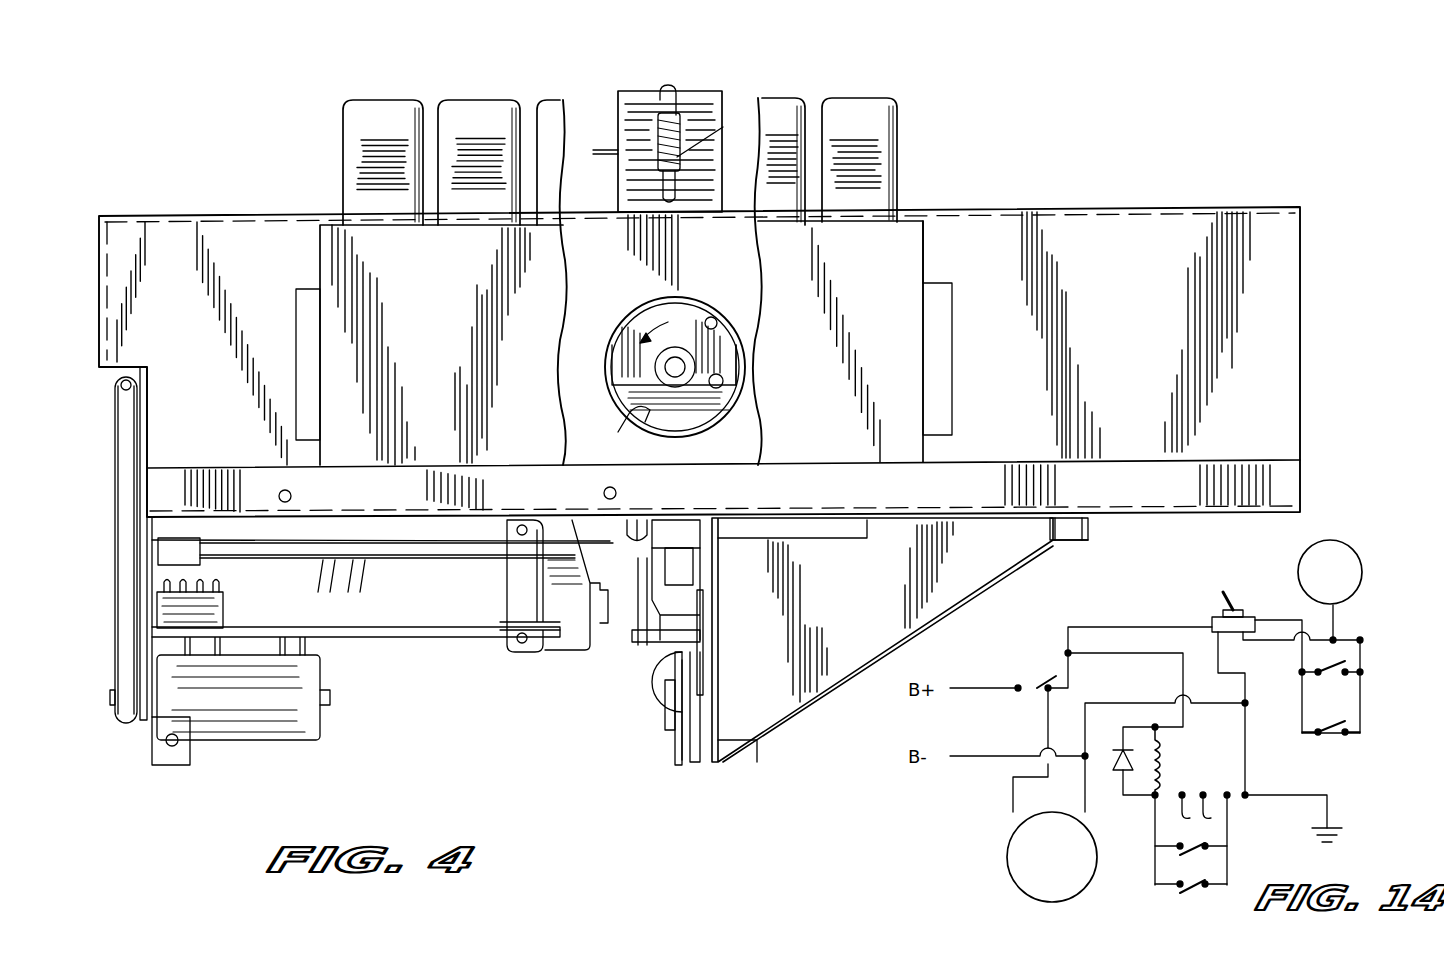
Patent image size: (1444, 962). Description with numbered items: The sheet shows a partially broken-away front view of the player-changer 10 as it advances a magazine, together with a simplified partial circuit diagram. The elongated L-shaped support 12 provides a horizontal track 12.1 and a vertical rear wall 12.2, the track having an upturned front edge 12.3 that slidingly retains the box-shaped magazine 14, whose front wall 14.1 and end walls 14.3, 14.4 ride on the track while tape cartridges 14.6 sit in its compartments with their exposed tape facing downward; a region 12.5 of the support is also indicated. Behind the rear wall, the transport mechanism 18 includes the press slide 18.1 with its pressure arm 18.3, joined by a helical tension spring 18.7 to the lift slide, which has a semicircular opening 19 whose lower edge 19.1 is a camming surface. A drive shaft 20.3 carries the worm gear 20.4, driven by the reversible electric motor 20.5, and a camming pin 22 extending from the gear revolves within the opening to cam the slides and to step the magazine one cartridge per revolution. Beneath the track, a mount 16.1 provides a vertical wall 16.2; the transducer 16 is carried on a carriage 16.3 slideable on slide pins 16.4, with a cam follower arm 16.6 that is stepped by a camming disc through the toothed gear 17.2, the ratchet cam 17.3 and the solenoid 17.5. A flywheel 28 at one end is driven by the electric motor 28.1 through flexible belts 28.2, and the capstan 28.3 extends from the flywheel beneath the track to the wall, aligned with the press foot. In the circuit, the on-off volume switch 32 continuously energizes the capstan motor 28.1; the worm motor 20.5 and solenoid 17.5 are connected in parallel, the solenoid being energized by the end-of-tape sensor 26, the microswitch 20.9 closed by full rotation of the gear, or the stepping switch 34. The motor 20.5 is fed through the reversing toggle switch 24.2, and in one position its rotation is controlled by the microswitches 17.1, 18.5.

In FIG. 4, the player-changer 10 is at (432, 715).
In FIG. 4, the support 12 is at (1272, 200).
In FIG. 4, the track 12.1 is at (1272, 498).
In FIG. 4, the rear wall 12.2 is at (1138, 326).
In FIG. 4, the upturned front edge 12.3 is at (1252, 460).
In FIG. 4, the frame hook 12.5 is at (613, 427).
In FIG. 4, the magazine 14 is at (885, 286).
In FIG. 4, the front wall 14.1 is at (905, 400).
In FIG. 4, the end wall 14.3 is at (928, 253).
In FIG. 4, the end wall 14.4 is at (325, 261).
In FIG. 4, the tape cartridges 14.6 is at (870, 115).
In FIG. 4, the transducer 16 is at (676, 535).
In FIG. 4, the mount 16.1 is at (852, 620).
In FIG. 4, the vertical wall 16.2 is at (718, 661).
In FIG. 4, the carriage 16.3 is at (640, 620).
In FIG. 4, the slide pins 16.4 is at (718, 618).
In FIG. 4, the cam follower arm 16.6 is at (700, 676).
In FIG. 14, the microswitch 17.1 is at (1340, 662).
In FIG. 4, the toothed gear 17.2 is at (667, 722).
In FIG. 4, the ratchet cam 17.3 is at (675, 752).
In FIG. 4, the solenoid 17.5 is at (662, 683).
In FIG. 14, the solenoid 17.5 is at (1163, 765).
In FIG. 4, the magazine transport mechanism 18 is at (598, 362).
In FIG. 4, the press slide 18.1 is at (713, 108).
In FIG. 4, the pressure arm 18.3 is at (680, 92).
In FIG. 14, the microswitch 18.5 is at (1340, 726).
In FIG. 4, the helical tension spring 18.7 is at (745, 122).
In FIG. 4, the semicircular opening 19 is at (728, 371).
In FIG. 4, the lower edge 19.1 is at (730, 374).
In FIG. 4, the drive shaft 20.3 is at (660, 362).
In FIG. 4, the worm gear 20.4 is at (718, 347).
In FIG. 14, the electric motor 20.5 is at (1340, 560).
In FIG. 14, the microswitch 20.9 is at (1195, 856).
In FIG. 4, the camming pin 22 is at (714, 318).
In FIG. 14, the toggle switch 24.2 is at (1210, 617).
In FIG. 14, the end-of-tape sensor 26 is at (1205, 810).
In FIG. 4, the flywheel 28 is at (140, 433).
In FIG. 4, the electric motor 28.1 is at (262, 704).
In FIG. 14, the electric motor 28.1 is at (1035, 870).
In FIG. 4, the flexible belts 28.2 is at (125, 457).
In FIG. 4, the capstan 28.3 is at (460, 556).
In FIG. 14, the on-off volume switch 32 is at (1040, 672).
In FIG. 14, the transducer stepping switch 34 is at (1195, 893).